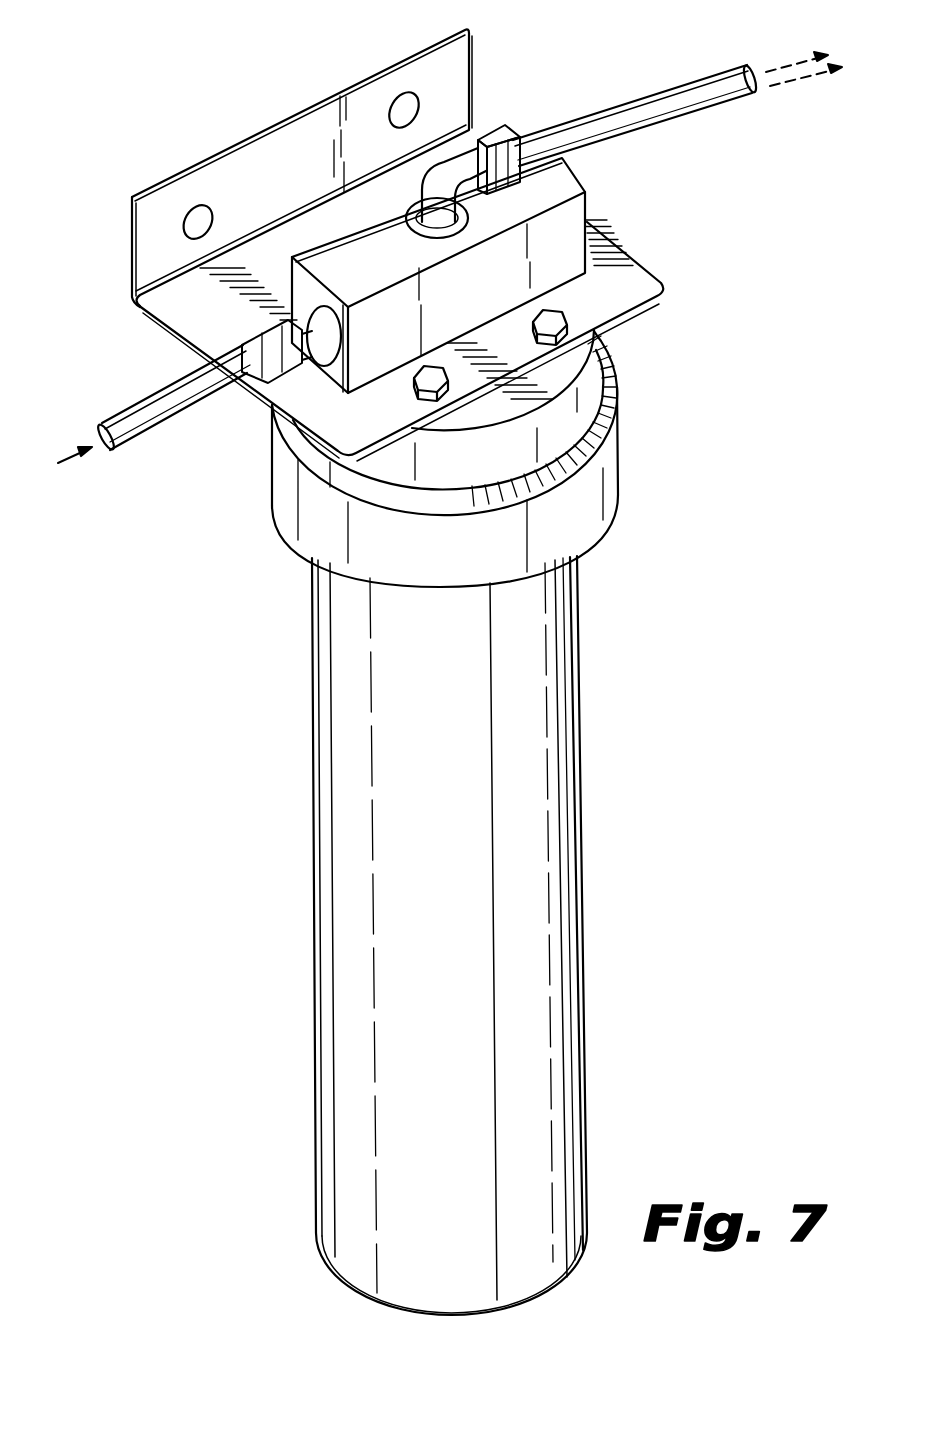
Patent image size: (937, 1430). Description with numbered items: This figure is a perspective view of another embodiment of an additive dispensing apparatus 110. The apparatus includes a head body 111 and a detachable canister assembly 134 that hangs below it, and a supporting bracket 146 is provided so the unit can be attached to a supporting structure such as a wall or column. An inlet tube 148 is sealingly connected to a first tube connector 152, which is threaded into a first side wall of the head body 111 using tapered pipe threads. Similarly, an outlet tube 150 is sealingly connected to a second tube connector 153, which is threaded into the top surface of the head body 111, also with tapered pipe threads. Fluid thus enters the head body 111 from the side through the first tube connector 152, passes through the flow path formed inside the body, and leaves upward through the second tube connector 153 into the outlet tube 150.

The additive dispensing apparatus 110 is at (450, 663).
The head body 111 is at (614, 452).
The detachable canister assembly 134 is at (573, 850).
The supporting bracket 146 is at (647, 288).
The inlet tube 148 is at (178, 404).
The outlet tube 150 is at (678, 100).
The first tube connector 152 is at (262, 324).
The second tube connector 153 is at (498, 136).